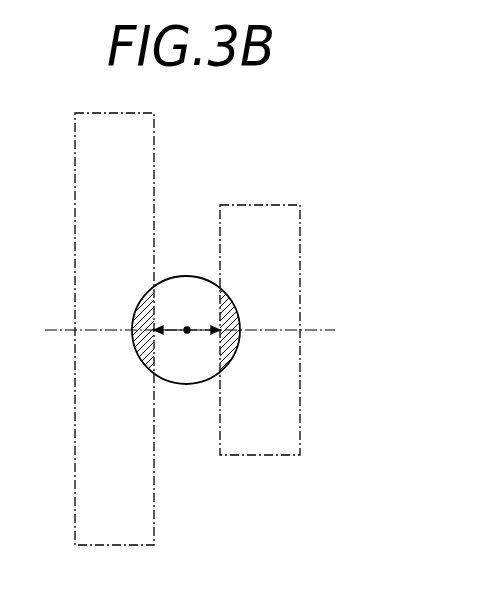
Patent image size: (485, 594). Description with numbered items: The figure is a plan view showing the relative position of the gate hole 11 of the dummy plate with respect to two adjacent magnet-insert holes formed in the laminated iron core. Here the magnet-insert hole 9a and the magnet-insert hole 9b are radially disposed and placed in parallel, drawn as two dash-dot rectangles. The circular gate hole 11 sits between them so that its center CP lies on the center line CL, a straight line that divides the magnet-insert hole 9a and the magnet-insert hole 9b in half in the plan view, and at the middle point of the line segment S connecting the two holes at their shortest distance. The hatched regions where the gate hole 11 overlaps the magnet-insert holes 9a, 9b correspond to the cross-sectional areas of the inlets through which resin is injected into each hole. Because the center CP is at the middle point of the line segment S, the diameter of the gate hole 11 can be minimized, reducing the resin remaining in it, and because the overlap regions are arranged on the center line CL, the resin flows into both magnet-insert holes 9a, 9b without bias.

The magnet-insert hole 9a is at (155, 160).
The magnet-insert hole 9b is at (301, 283).
The gate hole 11 is at (137, 299).
The line segment S is at (174, 330).
The center line CL is at (312, 338).
The center CP is at (187, 331).